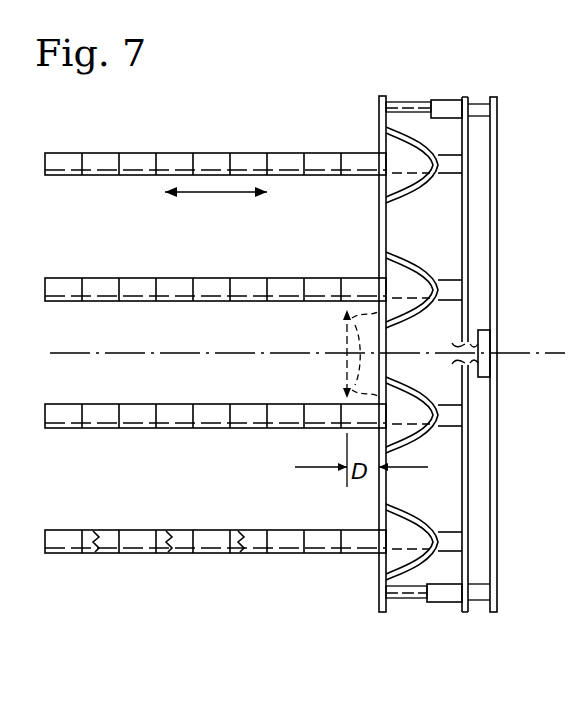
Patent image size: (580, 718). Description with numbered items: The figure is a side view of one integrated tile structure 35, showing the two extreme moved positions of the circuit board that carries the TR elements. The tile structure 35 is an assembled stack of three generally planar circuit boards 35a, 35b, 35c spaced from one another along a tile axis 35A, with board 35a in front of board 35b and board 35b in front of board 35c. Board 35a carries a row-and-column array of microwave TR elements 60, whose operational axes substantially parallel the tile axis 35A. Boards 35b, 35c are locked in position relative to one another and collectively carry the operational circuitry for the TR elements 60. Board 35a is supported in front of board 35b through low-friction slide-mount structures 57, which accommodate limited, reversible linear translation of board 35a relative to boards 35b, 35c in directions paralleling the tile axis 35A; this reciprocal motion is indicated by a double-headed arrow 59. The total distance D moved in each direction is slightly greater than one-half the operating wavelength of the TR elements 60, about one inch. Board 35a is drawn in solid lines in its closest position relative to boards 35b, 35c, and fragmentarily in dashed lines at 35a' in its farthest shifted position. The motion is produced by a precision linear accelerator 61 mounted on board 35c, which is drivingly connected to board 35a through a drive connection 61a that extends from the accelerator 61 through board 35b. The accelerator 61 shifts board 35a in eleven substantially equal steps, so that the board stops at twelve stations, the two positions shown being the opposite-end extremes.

The tile structure 35 is at (188, 98).
The tile axis 35A is at (156, 353).
The circuit board 35a is at (358, 341).
The farthest shifted position of board 35a 35a' is at (316, 354).
The circuit board 35b is at (532, 93).
The circuit board 35c is at (562, 155).
The slide-mount structure 57 is at (440, 100).
The double-headed arrow 59 is at (213, 195).
The microwave TR element 60 is at (415, 203).
The linear accelerator 61 is at (486, 352).
The drive connection 61a is at (446, 352).